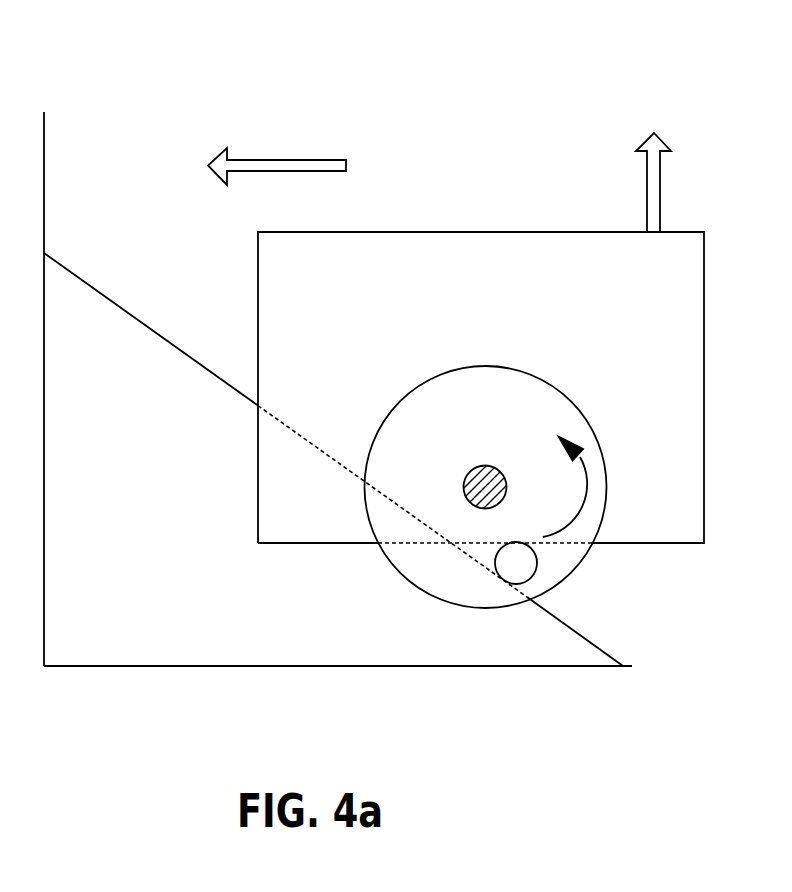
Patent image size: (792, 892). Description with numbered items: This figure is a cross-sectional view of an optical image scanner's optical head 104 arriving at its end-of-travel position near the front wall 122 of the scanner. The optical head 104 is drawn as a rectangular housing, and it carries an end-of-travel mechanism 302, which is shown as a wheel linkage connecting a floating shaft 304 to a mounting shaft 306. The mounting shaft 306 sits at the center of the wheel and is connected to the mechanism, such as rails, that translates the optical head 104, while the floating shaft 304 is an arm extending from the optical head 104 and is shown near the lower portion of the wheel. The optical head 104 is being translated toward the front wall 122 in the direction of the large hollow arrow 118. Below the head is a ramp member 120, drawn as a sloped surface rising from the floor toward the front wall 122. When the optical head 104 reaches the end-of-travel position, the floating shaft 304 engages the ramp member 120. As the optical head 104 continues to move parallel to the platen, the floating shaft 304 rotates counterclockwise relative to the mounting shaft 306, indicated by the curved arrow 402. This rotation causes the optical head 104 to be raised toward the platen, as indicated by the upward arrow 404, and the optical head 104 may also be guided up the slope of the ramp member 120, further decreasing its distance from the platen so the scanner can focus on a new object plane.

The optical head 104 is at (482, 232).
The direction of travel arrow 118 is at (295, 160).
The ramp member 120 is at (112, 666).
The front wall 122 is at (44, 164).
The end-of-travel mechanism 302 is at (562, 354).
The floating shaft 304 is at (537, 563).
The mounting shaft 306 is at (485, 463).
The counterclockwise rotation of the floating shaft 402 is at (587, 487).
The raising of the optical head 404 is at (660, 187).